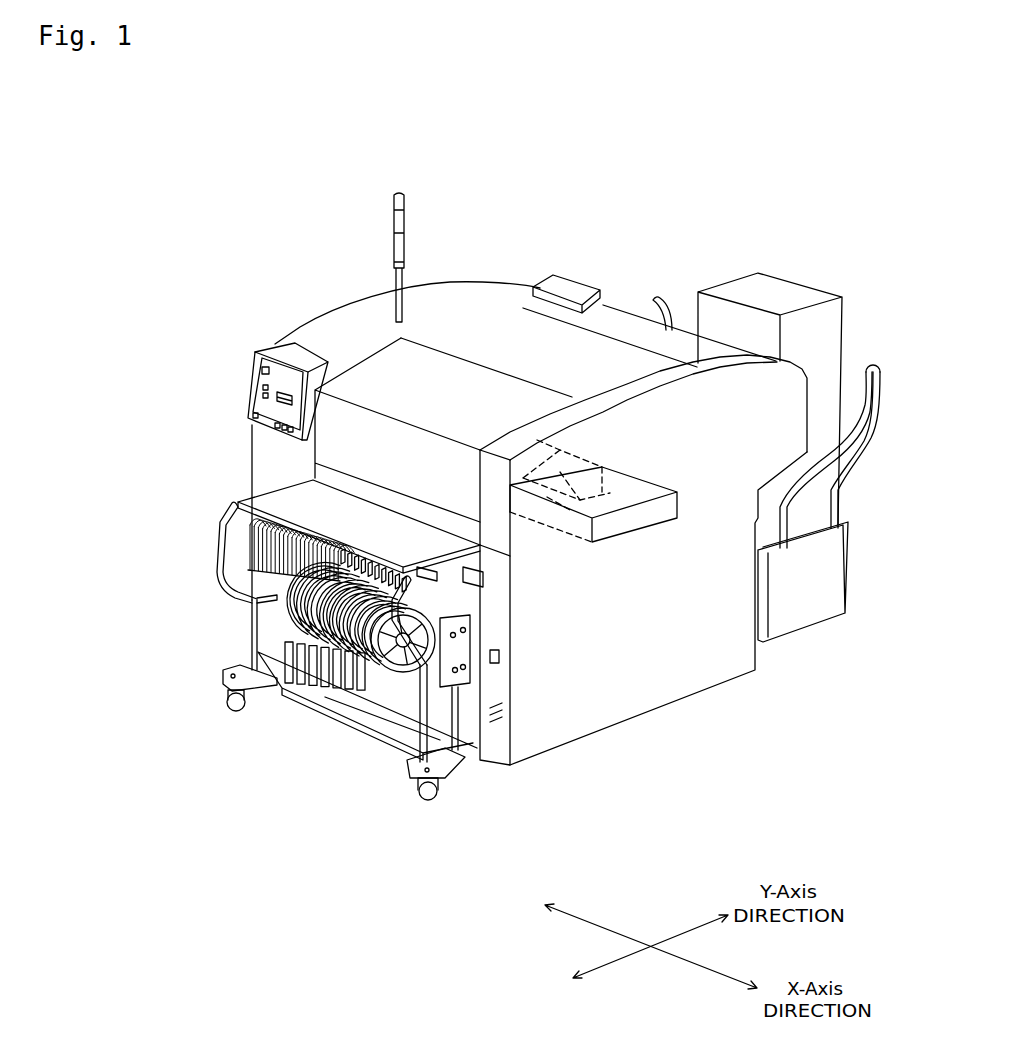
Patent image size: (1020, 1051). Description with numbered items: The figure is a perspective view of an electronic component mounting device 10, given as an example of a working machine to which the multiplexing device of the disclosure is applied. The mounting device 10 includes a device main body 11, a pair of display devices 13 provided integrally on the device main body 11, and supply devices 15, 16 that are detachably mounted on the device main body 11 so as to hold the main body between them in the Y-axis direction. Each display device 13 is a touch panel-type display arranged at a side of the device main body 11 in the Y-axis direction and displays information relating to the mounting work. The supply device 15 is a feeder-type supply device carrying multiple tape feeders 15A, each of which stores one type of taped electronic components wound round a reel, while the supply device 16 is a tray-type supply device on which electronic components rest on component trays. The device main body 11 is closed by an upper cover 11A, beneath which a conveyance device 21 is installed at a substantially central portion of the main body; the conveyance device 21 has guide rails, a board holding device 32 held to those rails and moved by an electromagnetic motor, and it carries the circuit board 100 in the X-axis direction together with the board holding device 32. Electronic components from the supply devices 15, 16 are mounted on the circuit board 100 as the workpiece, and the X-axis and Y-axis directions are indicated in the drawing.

The mounting device 10 is at (580, 123).
The device main body 11 is at (438, 282).
The upper cover 11A is at (508, 290).
The display device 13 is at (231, 373).
The supply device 15 is at (332, 747).
The tape feeder 15A is at (287, 600).
The supply device 16 is at (866, 309).
The conveyance device 21 is at (655, 475).
The board holding device 32 is at (610, 493).
The circuit board 100 is at (560, 472).